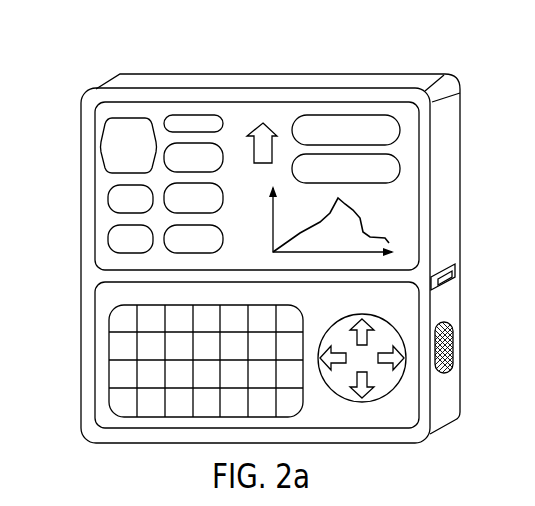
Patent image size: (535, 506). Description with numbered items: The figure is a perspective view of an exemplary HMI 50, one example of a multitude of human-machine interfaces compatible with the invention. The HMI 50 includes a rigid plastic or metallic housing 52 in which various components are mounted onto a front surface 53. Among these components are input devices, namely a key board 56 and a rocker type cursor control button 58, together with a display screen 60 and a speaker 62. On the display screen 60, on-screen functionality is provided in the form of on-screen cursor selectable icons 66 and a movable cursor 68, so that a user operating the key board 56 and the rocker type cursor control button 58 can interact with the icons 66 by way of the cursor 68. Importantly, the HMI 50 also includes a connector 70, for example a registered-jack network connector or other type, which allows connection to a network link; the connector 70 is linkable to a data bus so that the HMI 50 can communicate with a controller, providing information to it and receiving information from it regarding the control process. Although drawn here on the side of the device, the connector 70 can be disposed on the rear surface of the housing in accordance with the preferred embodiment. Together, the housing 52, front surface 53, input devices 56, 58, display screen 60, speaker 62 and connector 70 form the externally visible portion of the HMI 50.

The HMI 50 is at (86, 57).
The housing 52 is at (81, 207).
The front surface 53 is at (107, 218).
The key board 56 is at (121, 376).
The rocker type cursor control button 58 is at (393, 390).
The display screen 60 is at (96, 145).
The speaker 62 is at (453, 352).
The on-screen cursor selectable icons 66 is at (400, 172).
The movable cursor 68 is at (247, 140).
The connector 70 is at (455, 263).